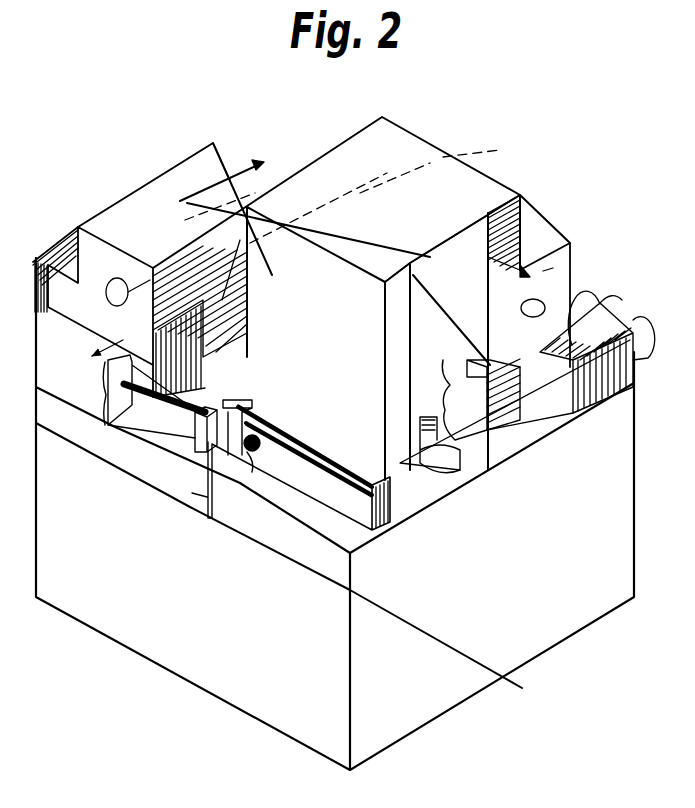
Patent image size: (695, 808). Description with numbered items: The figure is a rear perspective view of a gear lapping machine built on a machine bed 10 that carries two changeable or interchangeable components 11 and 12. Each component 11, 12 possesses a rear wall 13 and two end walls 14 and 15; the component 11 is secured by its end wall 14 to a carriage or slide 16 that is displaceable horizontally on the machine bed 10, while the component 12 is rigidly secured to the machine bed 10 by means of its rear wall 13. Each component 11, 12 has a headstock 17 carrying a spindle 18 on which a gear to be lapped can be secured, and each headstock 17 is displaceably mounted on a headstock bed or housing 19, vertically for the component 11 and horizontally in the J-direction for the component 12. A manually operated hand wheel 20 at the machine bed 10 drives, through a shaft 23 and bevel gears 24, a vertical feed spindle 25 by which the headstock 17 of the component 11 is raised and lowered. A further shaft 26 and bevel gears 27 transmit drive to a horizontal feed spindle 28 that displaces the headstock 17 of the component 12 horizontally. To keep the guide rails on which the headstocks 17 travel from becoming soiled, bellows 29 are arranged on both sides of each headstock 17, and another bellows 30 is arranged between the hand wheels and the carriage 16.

The machine bed 10 is at (457, 709).
The interchangeable component 11 is at (317, 147).
The interchangeable component 12 is at (122, 188).
The rear wall 13 is at (240, 240).
The end wall 14 is at (345, 185).
The end wall 15 is at (222, 360).
The carriage 16 is at (471, 490).
The headstock 17 is at (107, 222).
The spindle 18 is at (533, 298).
The headstock bed 19 is at (456, 280).
The hand wheel 20 is at (628, 318).
The shaft 23 is at (445, 460).
The bevel gears 24 is at (450, 473).
The vertical feed spindle 25 is at (455, 438).
The shaft 26 is at (262, 455).
The bevel gears 27 is at (228, 456).
The horizontal feed spindle 28 is at (170, 417).
The bellows 29 is at (383, 279).
The bellows 30 is at (590, 303).